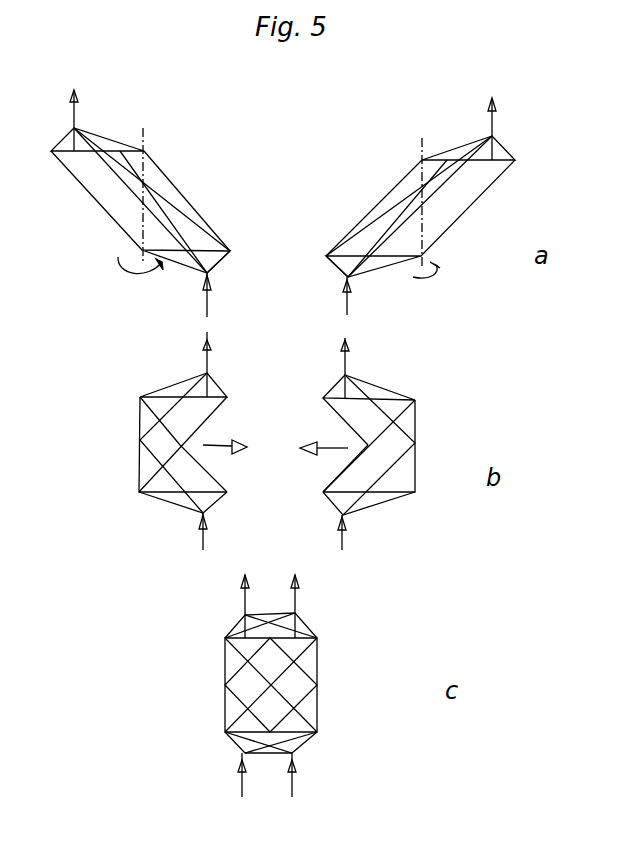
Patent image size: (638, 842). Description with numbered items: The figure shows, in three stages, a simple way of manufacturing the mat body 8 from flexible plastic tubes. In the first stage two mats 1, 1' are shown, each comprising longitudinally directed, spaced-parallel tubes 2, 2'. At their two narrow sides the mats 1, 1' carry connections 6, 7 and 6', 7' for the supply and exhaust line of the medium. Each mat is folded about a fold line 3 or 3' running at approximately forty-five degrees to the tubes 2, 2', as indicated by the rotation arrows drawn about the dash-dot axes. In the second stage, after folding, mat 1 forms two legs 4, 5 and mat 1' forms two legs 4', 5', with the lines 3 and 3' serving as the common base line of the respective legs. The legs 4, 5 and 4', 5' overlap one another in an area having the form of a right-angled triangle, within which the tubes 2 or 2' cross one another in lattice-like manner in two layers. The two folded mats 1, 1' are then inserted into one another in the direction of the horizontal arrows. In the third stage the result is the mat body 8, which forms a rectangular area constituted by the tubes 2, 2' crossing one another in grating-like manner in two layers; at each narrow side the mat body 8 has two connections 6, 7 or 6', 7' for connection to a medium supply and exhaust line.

The mat 1 is at (152, 396).
The mat 1' is at (402, 423).
The tubes 2 is at (153, 200).
The tubes 2' is at (409, 206).
The fold line 3 is at (144, 448).
The fold line 3' is at (415, 436).
The leg 4 is at (198, 421).
The leg 4' is at (334, 421).
The leg 5 is at (214, 468).
The leg 5' is at (331, 468).
The connection 6 is at (203, 537).
The connection 6' is at (341, 537).
The connection 7 is at (133, 364).
The connection 7' is at (416, 368).
The mat body 8 is at (338, 635).